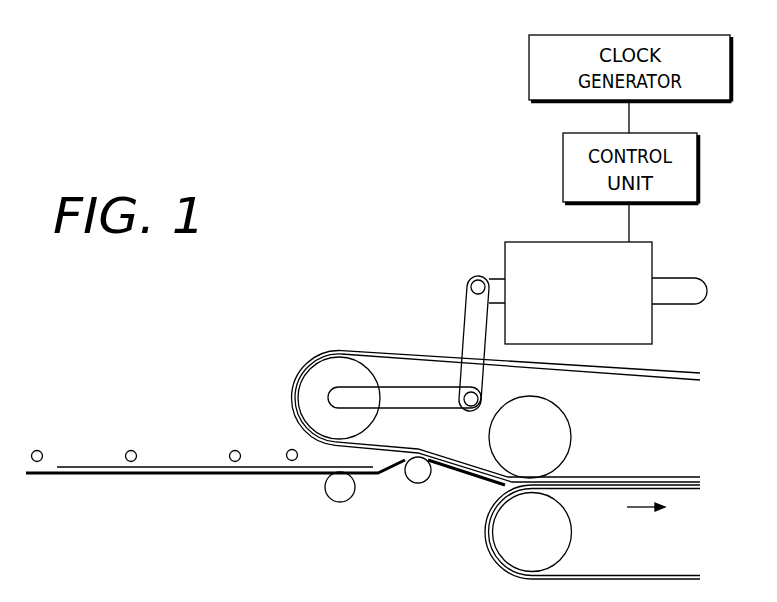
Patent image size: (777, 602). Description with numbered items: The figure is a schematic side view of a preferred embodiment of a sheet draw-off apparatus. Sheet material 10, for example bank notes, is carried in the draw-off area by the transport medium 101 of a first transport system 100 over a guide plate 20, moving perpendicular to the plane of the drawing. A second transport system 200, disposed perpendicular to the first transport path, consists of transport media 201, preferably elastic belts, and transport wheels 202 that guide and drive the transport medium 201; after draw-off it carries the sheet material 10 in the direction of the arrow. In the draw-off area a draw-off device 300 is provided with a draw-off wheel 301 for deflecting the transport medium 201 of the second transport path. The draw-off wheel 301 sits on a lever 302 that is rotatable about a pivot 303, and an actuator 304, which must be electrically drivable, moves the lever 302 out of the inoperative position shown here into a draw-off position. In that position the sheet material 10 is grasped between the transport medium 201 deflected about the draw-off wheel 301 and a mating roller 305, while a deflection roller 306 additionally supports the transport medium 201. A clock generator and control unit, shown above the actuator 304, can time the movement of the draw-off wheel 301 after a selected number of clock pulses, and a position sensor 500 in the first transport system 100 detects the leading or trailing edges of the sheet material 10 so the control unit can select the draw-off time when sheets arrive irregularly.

The sheet material 10 is at (93, 467).
The guide plate 20 is at (120, 475).
The first transport system 100 is at (244, 438).
The transport medium 101 is at (135, 452).
The position sensor 500 is at (288, 451).
The draw-off device 300 is at (437, 340).
The draw-off wheel 301 is at (317, 377).
The lever 302 is at (398, 400).
The pivot 303 is at (469, 408).
The actuator 304 is at (538, 260).
The mating roller 305 is at (333, 483).
The deflection roller 306 is at (415, 477).
The second transport system 200 is at (675, 465).
The transport medium 201 is at (668, 375).
The transport wheels 202 is at (555, 425).